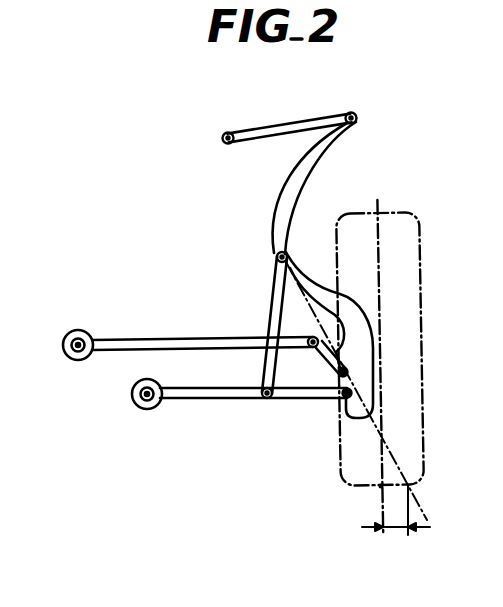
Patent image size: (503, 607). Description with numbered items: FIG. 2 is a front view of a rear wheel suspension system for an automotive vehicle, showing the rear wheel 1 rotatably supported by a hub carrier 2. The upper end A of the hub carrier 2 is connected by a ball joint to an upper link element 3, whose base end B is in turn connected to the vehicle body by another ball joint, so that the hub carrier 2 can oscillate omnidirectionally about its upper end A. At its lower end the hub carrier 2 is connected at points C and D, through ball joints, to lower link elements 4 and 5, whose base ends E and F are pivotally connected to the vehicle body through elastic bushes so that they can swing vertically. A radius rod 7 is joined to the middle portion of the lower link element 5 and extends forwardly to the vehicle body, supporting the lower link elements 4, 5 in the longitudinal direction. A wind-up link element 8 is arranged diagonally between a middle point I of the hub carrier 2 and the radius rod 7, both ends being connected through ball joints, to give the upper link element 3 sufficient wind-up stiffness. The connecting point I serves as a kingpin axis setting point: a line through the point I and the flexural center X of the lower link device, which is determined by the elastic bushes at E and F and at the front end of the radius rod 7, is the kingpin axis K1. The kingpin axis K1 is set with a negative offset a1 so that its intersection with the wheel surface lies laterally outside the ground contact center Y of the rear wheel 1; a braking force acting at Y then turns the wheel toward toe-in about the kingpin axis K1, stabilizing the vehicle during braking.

The rear wheel 1 is at (420, 249).
The hub carrier 2 is at (282, 185).
The upper link element 3 is at (285, 128).
The lower link element 4 is at (172, 336).
The lower link element 5 is at (192, 400).
The radius rod 7 is at (263, 399).
The wind-up link element 8 is at (268, 298).
The upper end A is at (353, 117).
The base end B is at (229, 131).
The connecting point C is at (313, 336).
The connecting point D is at (345, 397).
The base end E is at (63, 345).
The base end F is at (132, 395).
The middle point I is at (275, 256).
The flexural center X is at (343, 373).
The ground contact center Y is at (381, 487).
The kingpin axis K1 is at (395, 449).
The negative offset a1 is at (396, 525).